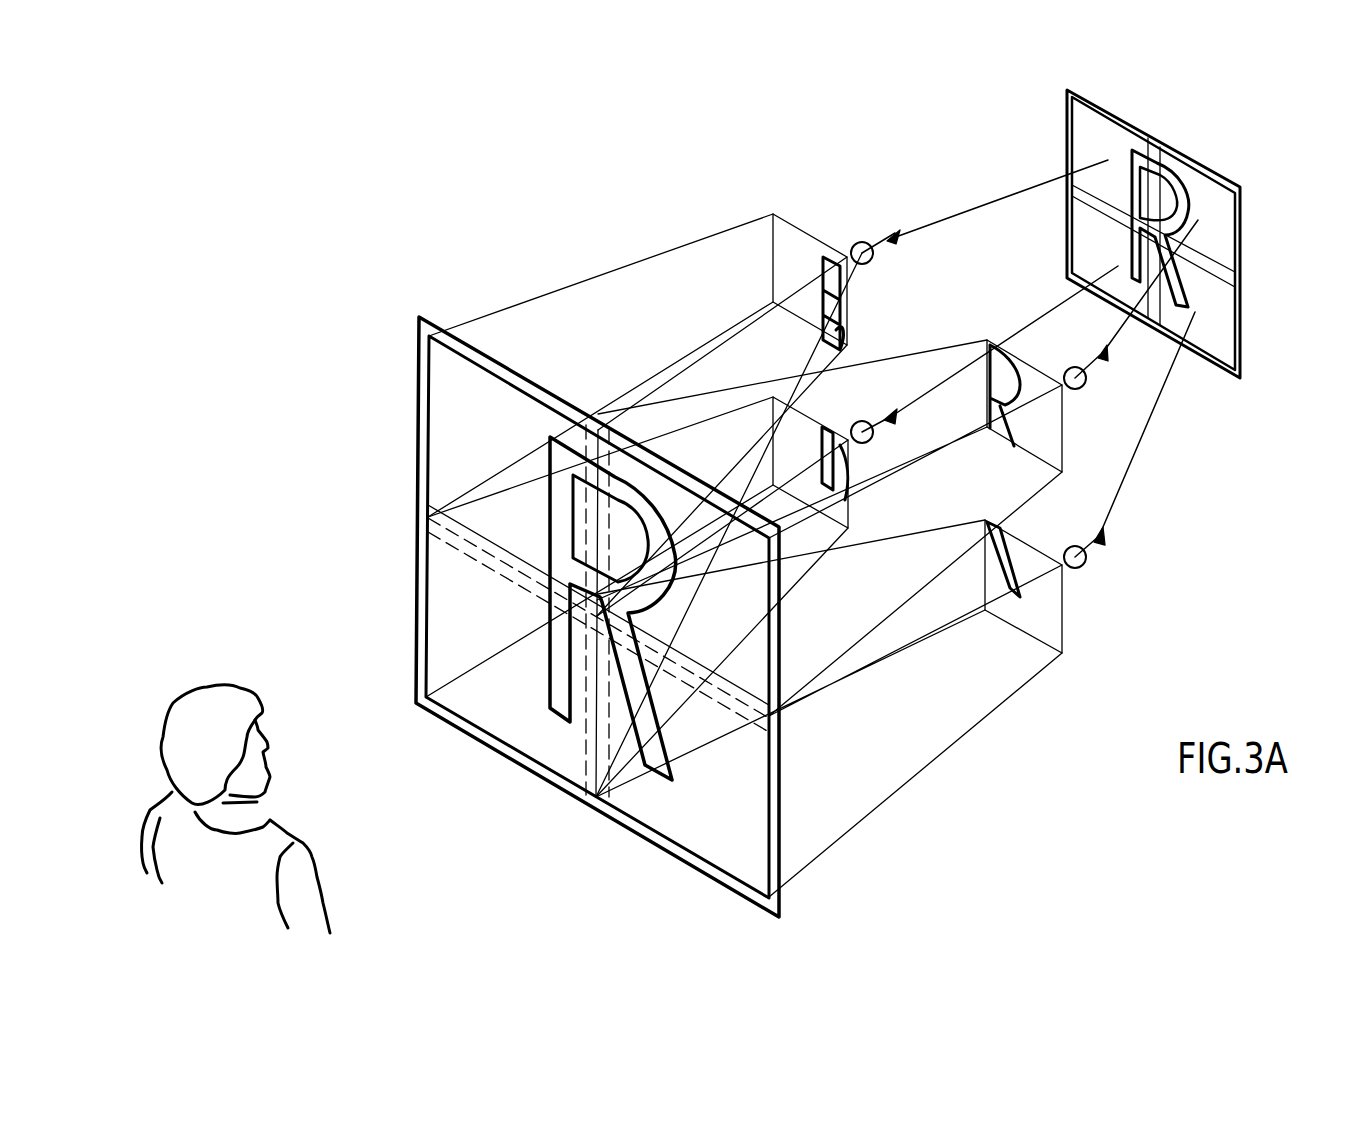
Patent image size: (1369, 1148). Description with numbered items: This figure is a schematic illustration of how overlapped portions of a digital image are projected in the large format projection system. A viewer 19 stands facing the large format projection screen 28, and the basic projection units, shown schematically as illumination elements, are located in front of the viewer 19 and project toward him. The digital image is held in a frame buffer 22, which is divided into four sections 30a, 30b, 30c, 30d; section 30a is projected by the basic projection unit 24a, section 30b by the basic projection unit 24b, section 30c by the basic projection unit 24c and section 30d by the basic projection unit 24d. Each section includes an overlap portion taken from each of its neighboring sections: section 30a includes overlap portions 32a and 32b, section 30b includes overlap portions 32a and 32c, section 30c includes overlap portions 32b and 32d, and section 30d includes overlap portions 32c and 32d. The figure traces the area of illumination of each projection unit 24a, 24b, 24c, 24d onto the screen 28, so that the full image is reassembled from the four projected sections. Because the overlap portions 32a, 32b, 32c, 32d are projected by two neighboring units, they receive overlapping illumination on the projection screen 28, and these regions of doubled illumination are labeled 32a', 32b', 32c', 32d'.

The viewer 19 is at (220, 695).
The frame buffer 22 is at (1248, 392).
The basic projection unit 24a is at (857, 243).
The basic projection unit 24b is at (1083, 386).
The basic projection unit 24c is at (873, 437).
The basic projection unit 24d is at (1087, 570).
The large format projection screen 28 is at (790, 880).
The section 30a is at (806, 232).
The section 30b is at (1043, 365).
The section 30c is at (810, 425).
The section 30d is at (1030, 548).
The overlap portion 32a is at (1187, 205).
The overlap portion 32b is at (1067, 212).
The overlap portion 32c is at (1246, 264).
The overlap portion 32d is at (1149, 312).
The overlapping illumination 32a' is at (613, 543).
The overlapping illumination 32b' is at (428, 551).
The overlapping illumination 32c' is at (774, 733).
The overlapping illumination 32d' is at (519, 795).